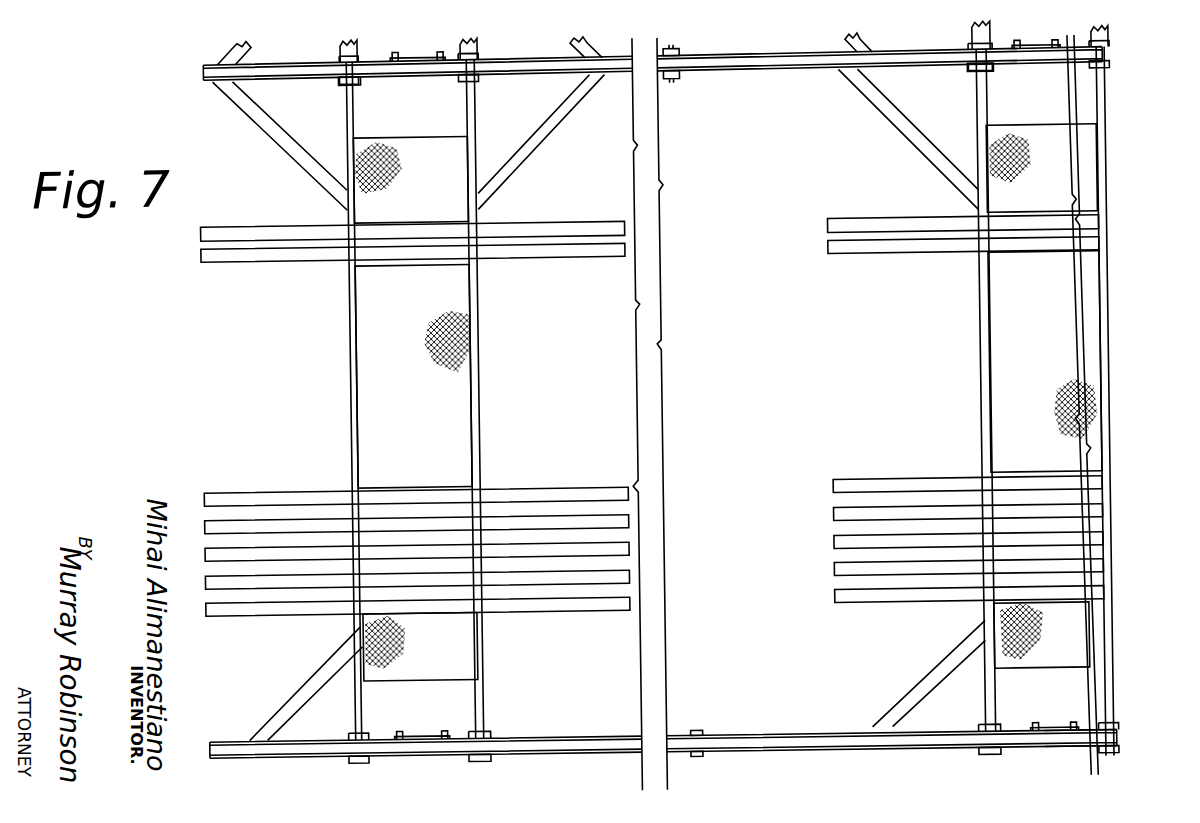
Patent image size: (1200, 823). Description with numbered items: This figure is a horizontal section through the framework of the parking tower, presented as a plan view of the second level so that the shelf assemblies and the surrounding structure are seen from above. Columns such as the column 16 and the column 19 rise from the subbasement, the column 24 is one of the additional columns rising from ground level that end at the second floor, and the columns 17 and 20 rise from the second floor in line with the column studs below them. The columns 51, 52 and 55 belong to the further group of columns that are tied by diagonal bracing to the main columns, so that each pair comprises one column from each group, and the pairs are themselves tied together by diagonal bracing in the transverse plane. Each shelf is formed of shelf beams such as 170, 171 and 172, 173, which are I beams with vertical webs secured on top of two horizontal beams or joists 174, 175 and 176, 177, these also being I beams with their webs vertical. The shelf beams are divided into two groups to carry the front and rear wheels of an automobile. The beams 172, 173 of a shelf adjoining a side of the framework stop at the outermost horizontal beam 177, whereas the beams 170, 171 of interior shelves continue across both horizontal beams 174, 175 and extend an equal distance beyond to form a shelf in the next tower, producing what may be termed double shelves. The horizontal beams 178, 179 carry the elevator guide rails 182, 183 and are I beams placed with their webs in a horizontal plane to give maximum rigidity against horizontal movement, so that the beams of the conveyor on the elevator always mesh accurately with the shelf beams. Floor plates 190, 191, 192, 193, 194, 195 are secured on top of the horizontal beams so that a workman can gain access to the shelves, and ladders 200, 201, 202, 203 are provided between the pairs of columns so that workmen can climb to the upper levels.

The column 16 is at (1110, 62).
The column 17 is at (475, 57).
The column 19 is at (1102, 753).
The column 20 is at (486, 735).
The column 24 is at (981, 726).
The column 51 is at (972, 74).
The column 52 is at (345, 82).
The column 55 is at (349, 730).
The shelf beam 170 is at (676, 482).
The shelf beam 171 is at (181, 219).
The shelf beam 172 is at (812, 488).
The shelf beam 173 is at (808, 220).
The horizontal beam 174 is at (351, 342).
The horizontal beam 175 is at (483, 341).
The horizontal beam 176 is at (985, 324).
The outermost horizontal beam 177 is at (1109, 335).
The horizontal beam 178 is at (826, 733).
The horizontal beam 179 is at (777, 66).
The elevator guide rail 182 is at (706, 731).
The elevator guide rail 183 is at (681, 78).
The floor plate 190 is at (394, 672).
The floor plate 191 is at (373, 410).
The floor plate 192 is at (376, 144).
The floor plate 193 is at (1021, 670).
The floor plate 194 is at (1000, 393).
The floor plate 195 is at (1006, 147).
The ladder 200 is at (408, 732).
The ladder 201 is at (434, 52).
The ladder 202 is at (1037, 731).
The ladder 203 is at (1042, 45).